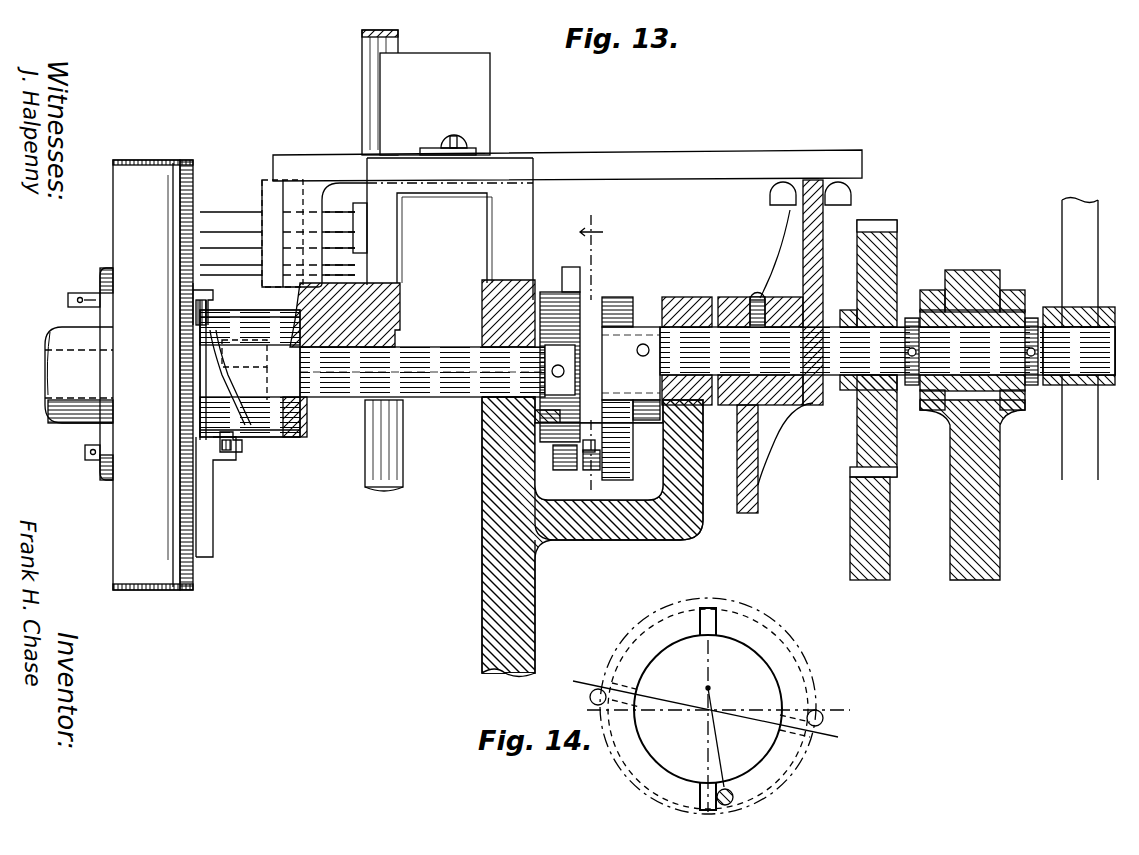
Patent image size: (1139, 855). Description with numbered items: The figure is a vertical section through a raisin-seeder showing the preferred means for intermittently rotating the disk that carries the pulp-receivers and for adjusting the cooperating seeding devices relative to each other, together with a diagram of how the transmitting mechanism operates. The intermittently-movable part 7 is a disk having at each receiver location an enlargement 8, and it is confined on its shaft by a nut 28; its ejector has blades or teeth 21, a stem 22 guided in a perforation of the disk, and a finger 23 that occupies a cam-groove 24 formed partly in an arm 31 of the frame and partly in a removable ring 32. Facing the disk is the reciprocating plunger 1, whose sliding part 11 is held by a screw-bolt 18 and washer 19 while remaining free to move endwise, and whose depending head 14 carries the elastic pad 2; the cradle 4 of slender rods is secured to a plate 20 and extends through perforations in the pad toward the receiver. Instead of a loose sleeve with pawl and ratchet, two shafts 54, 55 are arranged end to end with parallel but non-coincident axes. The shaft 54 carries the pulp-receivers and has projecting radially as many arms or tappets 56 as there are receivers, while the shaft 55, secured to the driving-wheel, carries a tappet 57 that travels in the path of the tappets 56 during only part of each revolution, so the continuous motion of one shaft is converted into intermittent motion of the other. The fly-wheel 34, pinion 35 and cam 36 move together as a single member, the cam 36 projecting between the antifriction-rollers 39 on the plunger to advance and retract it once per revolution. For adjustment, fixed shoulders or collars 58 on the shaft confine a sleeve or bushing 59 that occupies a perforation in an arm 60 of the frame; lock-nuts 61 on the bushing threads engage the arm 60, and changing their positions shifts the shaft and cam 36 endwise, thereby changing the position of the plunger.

In FIG. 13, the reciprocating plunger 1 is at (346, 158).
In FIG. 13, the elastic pad 2 is at (264, 182).
In FIG. 13, the cradle 4 is at (277, 243).
In FIG. 13, the intermittently-movable part 7 is at (188, 163).
In FIG. 13, the enlargement 8 is at (153, 375).
In FIG. 13, the sliding part 11 is at (567, 165).
In FIG. 13, the depending head 14 is at (592, 347).
In FIG. 13, the screw-bolt 18 is at (458, 140).
In FIG. 13, the washer 19 is at (478, 150).
In FIG. 13, the plate 20 is at (385, 252).
In FIG. 13, the blades or teeth 21 is at (200, 503).
In FIG. 13, the stem 22 is at (82, 292).
In FIG. 13, the finger 23 is at (212, 300).
In FIG. 13, the cam-groove 24 is at (212, 368).
In FIG. 13, the nut 28 is at (79, 375).
In FIG. 13, the arm 31 is at (250, 373).
In FIG. 13, the removable ring 32 is at (200, 345).
In FIG. 13, the fly-wheel 34 is at (1088, 440).
In FIG. 13, the pinion 35 is at (893, 440).
In FIG. 13, the cam 36 is at (758, 492).
In FIG. 13, the antifriction-rollers 39 is at (805, 292).
In FIG. 13, the shaft 54 is at (430, 357).
In FIG. 13, the shaft 55 is at (887, 351).
In FIG. 13, the arms or tappets 56 is at (568, 280).
In FIG. 14, the arms or tappets 56 is at (716, 622).
In FIG. 13, the tappet 57 is at (585, 470).
In FIG. 14, the tappet 57 is at (733, 800).
In FIG. 13, the fixed shoulders or collars 58 is at (910, 318).
In FIG. 13, the sleeve or bushing 59 is at (968, 302).
In FIG. 13, the arm 60 is at (990, 428).
In FIG. 13, the lock-nuts 61 is at (930, 290).